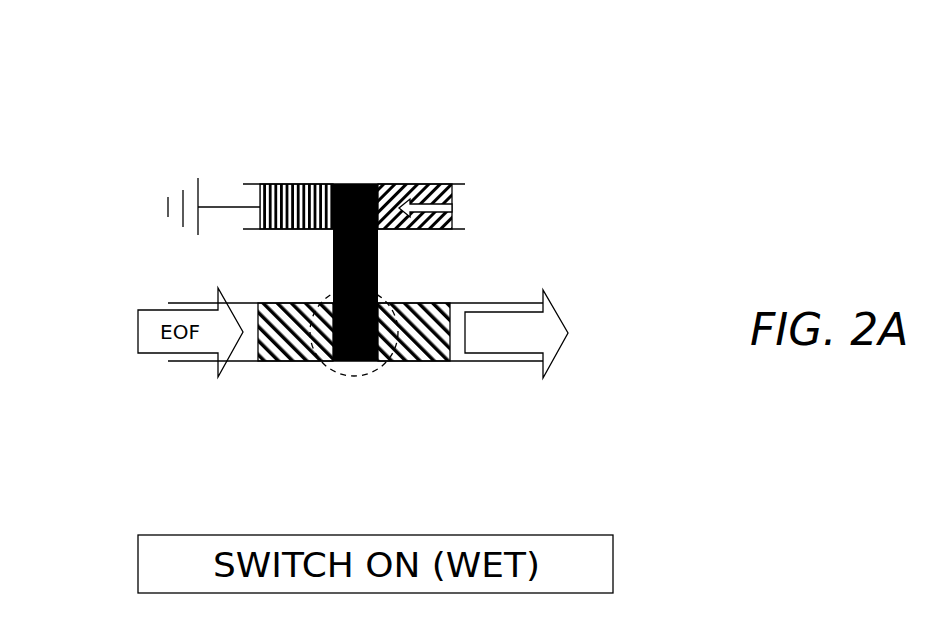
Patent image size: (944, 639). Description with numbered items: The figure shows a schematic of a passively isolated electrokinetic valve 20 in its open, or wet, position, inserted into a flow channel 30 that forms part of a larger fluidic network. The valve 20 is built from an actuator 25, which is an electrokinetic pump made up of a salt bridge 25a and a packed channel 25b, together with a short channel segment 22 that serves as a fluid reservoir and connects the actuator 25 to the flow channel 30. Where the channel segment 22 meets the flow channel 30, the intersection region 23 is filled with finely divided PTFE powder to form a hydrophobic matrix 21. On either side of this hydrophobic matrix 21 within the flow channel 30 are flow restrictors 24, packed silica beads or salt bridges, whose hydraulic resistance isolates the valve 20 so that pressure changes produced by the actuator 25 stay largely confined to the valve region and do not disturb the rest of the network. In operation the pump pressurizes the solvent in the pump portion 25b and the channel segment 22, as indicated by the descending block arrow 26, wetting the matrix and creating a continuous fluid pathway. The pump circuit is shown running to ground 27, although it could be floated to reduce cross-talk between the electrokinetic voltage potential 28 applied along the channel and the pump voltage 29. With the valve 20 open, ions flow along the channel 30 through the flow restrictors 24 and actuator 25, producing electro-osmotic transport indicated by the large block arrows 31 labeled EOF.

The EK valve 20 is at (188, 76).
The hydrophobic matrix 21 is at (350, 365).
The channel segment 22 is at (330, 242).
The intersection region 23 is at (402, 288).
The flow restrictors 24 is at (287, 360).
The actuator 25 is at (337, 164).
The salt bridge 25a is at (265, 185).
The packed channel 25b is at (432, 183).
The descending block arrow 26 is at (335, 185).
The ground 27 is at (198, 180).
The electrokinetic voltage potential 28 is at (92, 322).
The pump voltage 29 is at (552, 200).
The flow channel 30 is at (488, 363).
The block arrows 31 is at (562, 345).